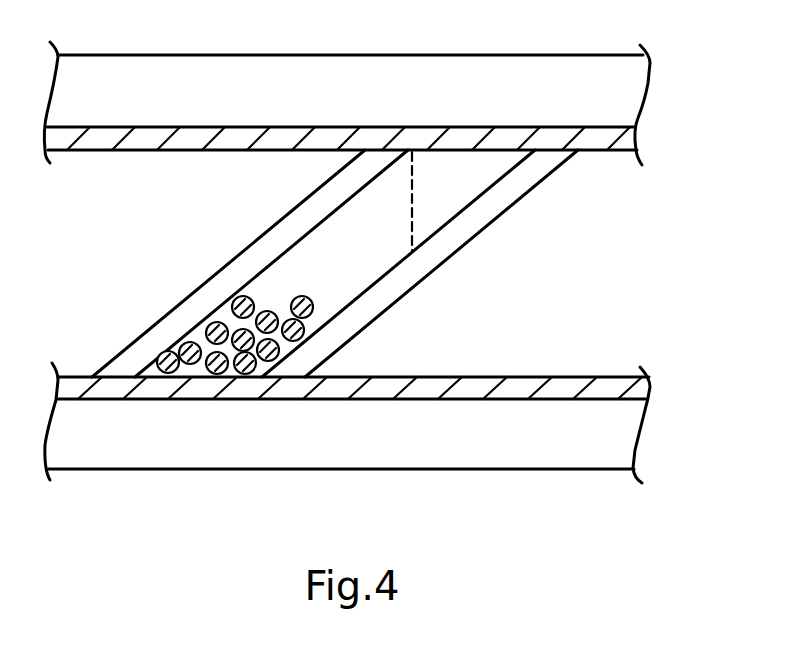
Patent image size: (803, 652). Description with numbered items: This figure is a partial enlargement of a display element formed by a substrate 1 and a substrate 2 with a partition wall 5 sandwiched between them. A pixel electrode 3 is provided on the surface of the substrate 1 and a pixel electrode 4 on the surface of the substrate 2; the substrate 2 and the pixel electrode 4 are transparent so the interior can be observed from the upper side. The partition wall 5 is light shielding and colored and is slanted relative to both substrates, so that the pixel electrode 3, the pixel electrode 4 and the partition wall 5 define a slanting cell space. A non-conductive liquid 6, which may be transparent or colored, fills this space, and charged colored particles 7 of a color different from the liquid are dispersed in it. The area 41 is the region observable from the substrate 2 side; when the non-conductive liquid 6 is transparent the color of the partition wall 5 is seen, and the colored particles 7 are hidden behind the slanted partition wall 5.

The substrate 1 is at (620, 448).
The substrate 2 is at (620, 88).
The pixel electrode 3 is at (650, 387).
The pixel electrode 4 is at (620, 145).
The partition wall 5 is at (160, 331).
The non-conductive liquid 6 is at (327, 260).
The colored particles 7 is at (218, 302).
The area 41 is at (593, 162).